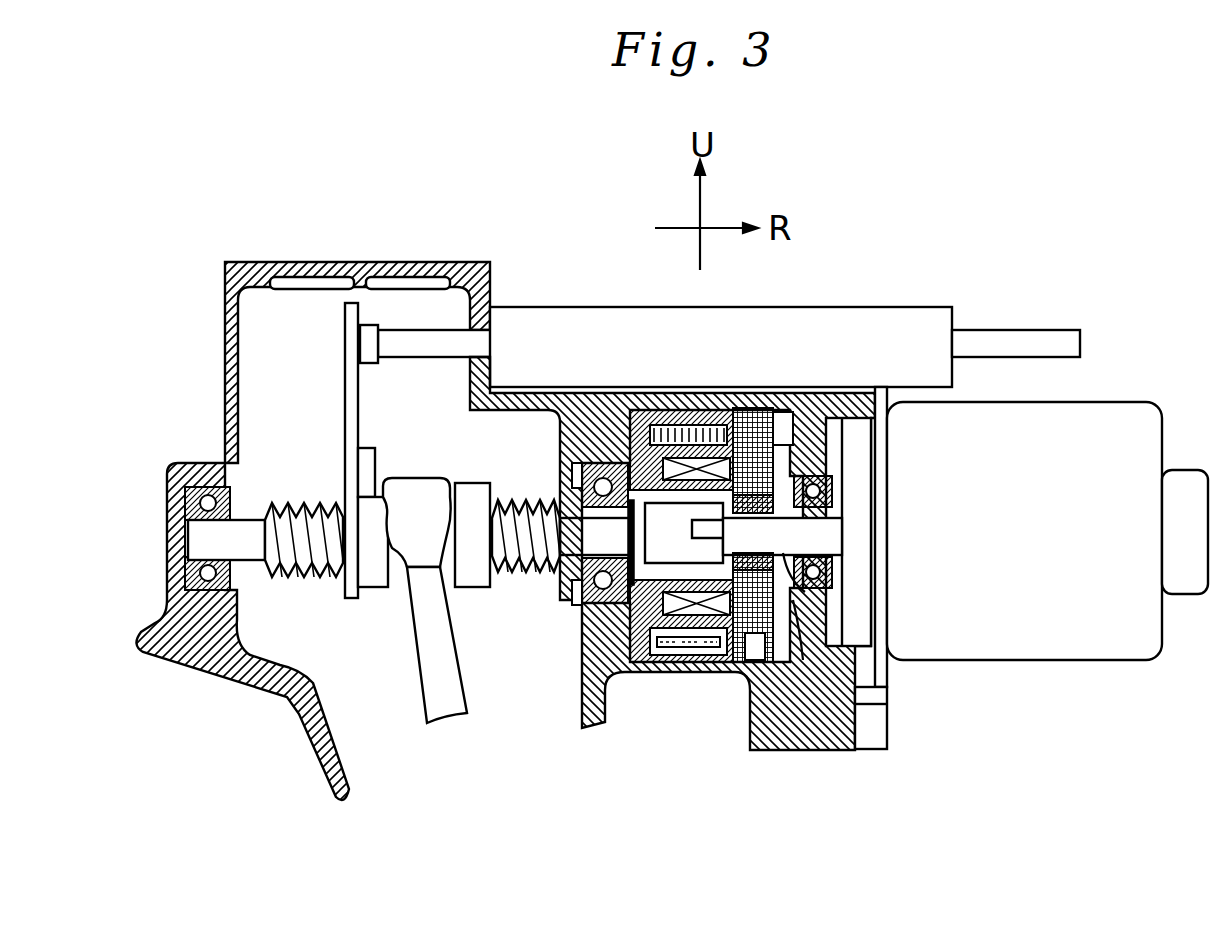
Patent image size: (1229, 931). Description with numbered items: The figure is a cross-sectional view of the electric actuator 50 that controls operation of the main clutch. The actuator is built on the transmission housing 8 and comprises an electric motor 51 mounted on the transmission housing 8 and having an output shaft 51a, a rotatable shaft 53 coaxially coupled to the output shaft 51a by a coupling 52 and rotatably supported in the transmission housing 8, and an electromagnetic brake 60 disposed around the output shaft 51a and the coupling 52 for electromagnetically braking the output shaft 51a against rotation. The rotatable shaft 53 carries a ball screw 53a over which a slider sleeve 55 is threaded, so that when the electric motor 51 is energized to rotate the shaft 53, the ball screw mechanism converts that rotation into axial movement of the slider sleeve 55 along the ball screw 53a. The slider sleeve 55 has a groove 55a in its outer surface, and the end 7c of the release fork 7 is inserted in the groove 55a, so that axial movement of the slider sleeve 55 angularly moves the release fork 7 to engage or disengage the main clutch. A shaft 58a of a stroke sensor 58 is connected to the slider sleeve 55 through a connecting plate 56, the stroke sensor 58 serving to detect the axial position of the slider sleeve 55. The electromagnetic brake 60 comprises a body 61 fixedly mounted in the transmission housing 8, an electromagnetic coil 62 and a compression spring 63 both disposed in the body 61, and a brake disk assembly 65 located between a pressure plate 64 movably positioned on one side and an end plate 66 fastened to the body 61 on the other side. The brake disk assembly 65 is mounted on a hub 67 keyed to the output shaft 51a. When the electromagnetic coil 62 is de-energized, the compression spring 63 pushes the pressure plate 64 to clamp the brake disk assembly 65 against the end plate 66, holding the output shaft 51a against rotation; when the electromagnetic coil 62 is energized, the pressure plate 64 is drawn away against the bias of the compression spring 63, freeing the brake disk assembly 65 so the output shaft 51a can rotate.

The release fork 7 is at (425, 690).
The end of release fork 7c is at (396, 590).
The transmission housing 8 is at (582, 689).
The electric actuator 50 is at (728, 580).
The electric motor 51 is at (1026, 546).
The output shaft 51a is at (835, 538).
The coupling 52 is at (688, 556).
The rotatable shaft 53 is at (262, 548).
The ball screw 53a is at (512, 500).
The slider sleeve 55 is at (470, 575).
The groove 55a is at (440, 500).
The connecting plate 56 is at (350, 413).
The stroke sensor 58 is at (736, 376).
The shaft of stroke sensor 58a is at (400, 344).
The electromagnetic brake 60 is at (652, 674).
The body 61 is at (600, 612).
The electromagnetic coil 62 is at (682, 410).
The compression spring 63 is at (672, 663).
The pressure plate 64 is at (752, 668).
The brake disk assembly 65 is at (755, 655).
The end plate 66 is at (800, 670).
The hub 67 is at (797, 620).